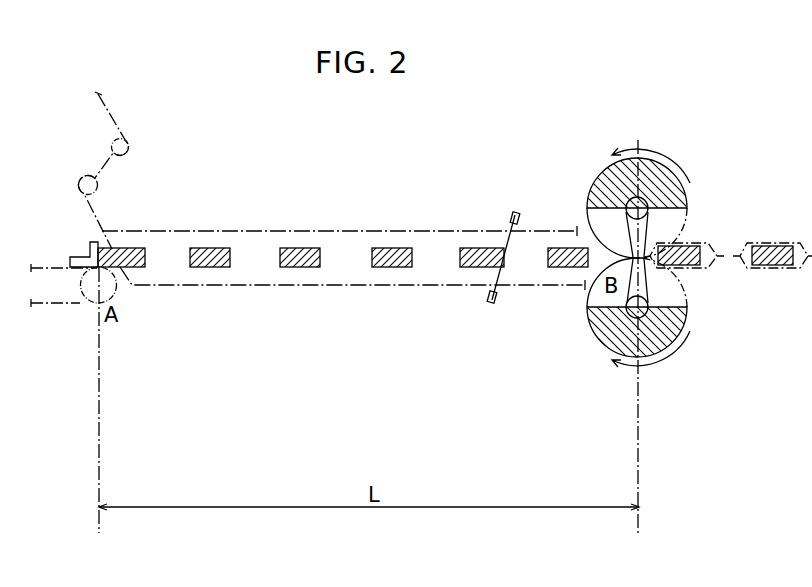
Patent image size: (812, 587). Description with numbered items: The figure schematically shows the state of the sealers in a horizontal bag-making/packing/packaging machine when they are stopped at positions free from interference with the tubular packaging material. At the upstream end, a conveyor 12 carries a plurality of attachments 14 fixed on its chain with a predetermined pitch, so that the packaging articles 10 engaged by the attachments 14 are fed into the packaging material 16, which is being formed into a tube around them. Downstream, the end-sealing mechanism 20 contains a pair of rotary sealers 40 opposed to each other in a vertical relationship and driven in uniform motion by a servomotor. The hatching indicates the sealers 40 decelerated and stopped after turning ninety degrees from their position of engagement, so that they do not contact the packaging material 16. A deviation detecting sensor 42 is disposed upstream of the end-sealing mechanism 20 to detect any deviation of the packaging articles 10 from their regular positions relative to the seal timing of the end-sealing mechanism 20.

The packaging articles 10 is at (133, 250).
The conveyor 12 is at (80, 303).
The attachments 14 is at (90, 248).
The packaging material 16 is at (222, 231).
The end-sealing mechanism 20 is at (656, 135).
The rotary sealers 40 is at (622, 228).
The deviation detecting sensor 42 is at (512, 213).